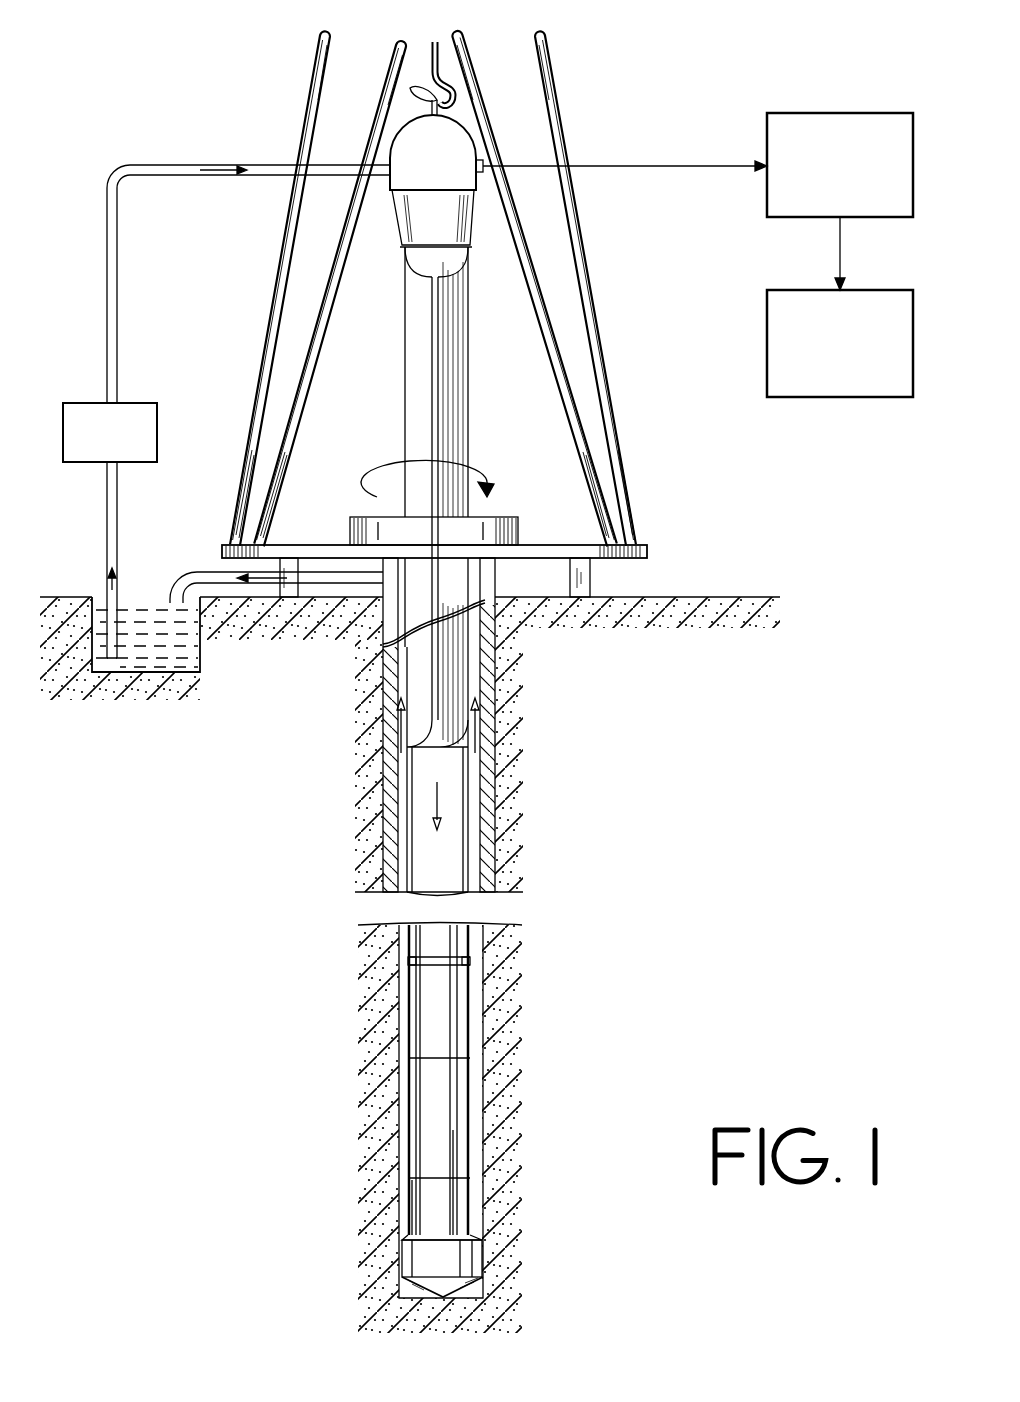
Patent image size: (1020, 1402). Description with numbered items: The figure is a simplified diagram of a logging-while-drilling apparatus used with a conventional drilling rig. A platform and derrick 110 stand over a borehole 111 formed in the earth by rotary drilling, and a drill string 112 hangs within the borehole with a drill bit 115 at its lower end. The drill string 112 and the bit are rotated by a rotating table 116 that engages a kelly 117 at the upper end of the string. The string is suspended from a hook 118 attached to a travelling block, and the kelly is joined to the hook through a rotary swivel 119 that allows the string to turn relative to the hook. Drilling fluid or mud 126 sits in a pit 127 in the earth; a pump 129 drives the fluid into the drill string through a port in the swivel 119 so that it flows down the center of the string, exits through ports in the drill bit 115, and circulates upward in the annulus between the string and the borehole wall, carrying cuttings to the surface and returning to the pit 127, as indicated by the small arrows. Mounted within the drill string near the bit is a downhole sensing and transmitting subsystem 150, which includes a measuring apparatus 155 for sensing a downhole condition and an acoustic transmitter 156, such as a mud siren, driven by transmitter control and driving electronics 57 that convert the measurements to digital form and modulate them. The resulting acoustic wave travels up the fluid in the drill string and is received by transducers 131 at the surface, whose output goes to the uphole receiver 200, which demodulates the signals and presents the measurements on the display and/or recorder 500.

The transmitter control and driving electronics 57 is at (460, 1170).
The platform and derrick 110 is at (677, 536).
The borehole 111 is at (477, 985).
The drill string 112 is at (415, 828).
The drill bit 115 is at (403, 1287).
The rotating table 116 is at (540, 507).
The kelly 117 is at (405, 388).
The hook 118 is at (431, 46).
The rotary swivel 119 is at (393, 207).
The drilling fluid or mud 126 is at (197, 647).
The pit 127 is at (80, 672).
The pump 129 is at (157, 410).
The transducers 131 is at (483, 173).
The downhole sensing and transmitting subsystem 150 is at (438, 1080).
The measuring apparatus 155 is at (418, 1205).
The acoustic transmitter 156 is at (420, 1015).
The uphole receiver 200 is at (892, 113).
The display and/or recorder 500 is at (875, 398).